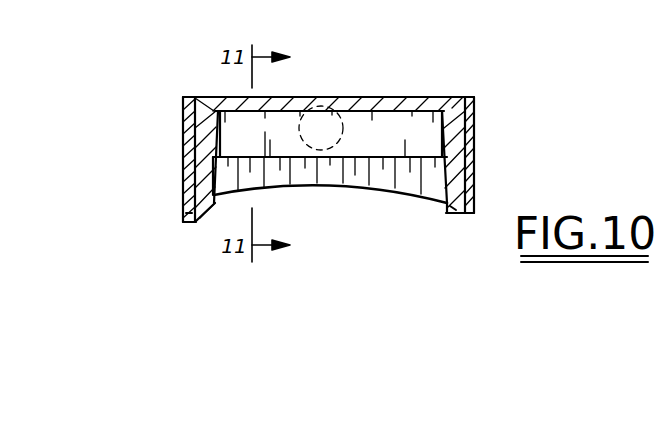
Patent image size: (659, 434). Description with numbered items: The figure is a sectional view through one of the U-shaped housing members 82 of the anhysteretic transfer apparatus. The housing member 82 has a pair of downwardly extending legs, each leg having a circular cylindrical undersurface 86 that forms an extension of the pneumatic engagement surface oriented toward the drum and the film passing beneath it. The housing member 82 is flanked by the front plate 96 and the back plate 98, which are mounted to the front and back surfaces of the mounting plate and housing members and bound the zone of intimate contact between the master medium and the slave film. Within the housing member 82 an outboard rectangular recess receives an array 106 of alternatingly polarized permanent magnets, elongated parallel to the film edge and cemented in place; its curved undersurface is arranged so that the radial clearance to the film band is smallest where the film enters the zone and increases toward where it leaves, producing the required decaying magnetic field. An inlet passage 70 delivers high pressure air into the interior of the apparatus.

The inlet passage 70 is at (347, 124).
The housing member 82 is at (393, 97).
The circular cylindrical undersurface 86 is at (203, 213).
The front plate 96 is at (477, 157).
The back plate 98 is at (182, 143).
The array of permanent magnets 106 is at (378, 198).